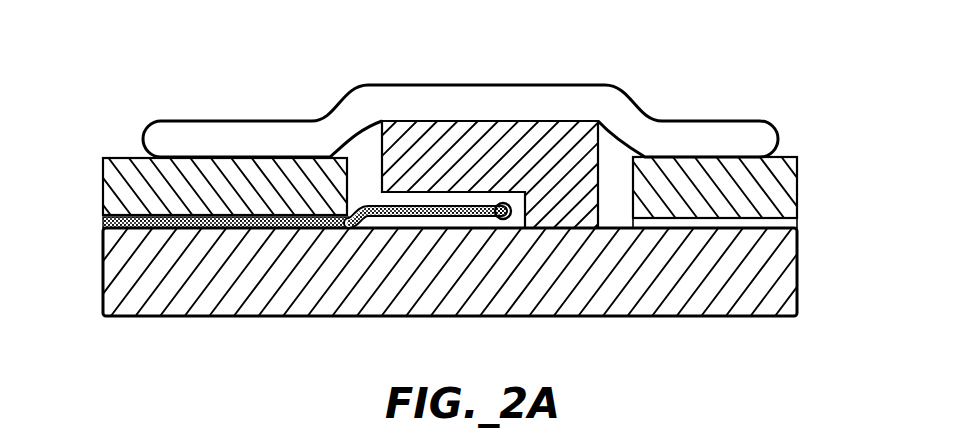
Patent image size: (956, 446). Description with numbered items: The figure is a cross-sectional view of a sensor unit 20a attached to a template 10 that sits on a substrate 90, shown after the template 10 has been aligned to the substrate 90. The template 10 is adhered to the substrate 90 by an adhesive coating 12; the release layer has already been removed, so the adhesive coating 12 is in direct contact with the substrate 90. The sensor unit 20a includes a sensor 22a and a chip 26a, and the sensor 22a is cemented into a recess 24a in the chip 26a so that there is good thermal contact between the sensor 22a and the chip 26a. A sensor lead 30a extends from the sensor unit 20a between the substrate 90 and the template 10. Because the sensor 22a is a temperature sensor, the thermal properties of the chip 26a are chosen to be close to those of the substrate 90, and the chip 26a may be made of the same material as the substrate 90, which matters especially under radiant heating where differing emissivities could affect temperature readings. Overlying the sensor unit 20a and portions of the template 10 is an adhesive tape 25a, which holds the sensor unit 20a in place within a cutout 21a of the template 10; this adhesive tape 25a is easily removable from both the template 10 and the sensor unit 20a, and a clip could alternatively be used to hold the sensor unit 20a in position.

The template 10 is at (112, 173).
The adhesive coating 12 is at (783, 222).
The sensor unit 20a is at (460, 98).
The cutout 21a is at (613, 153).
The sensor 22a is at (500, 220).
The recess 24a is at (412, 220).
The adhesive tape 25a is at (398, 97).
The chip 26a is at (578, 218).
The sensor lead 30a is at (106, 223).
The substrate 90 is at (676, 304).